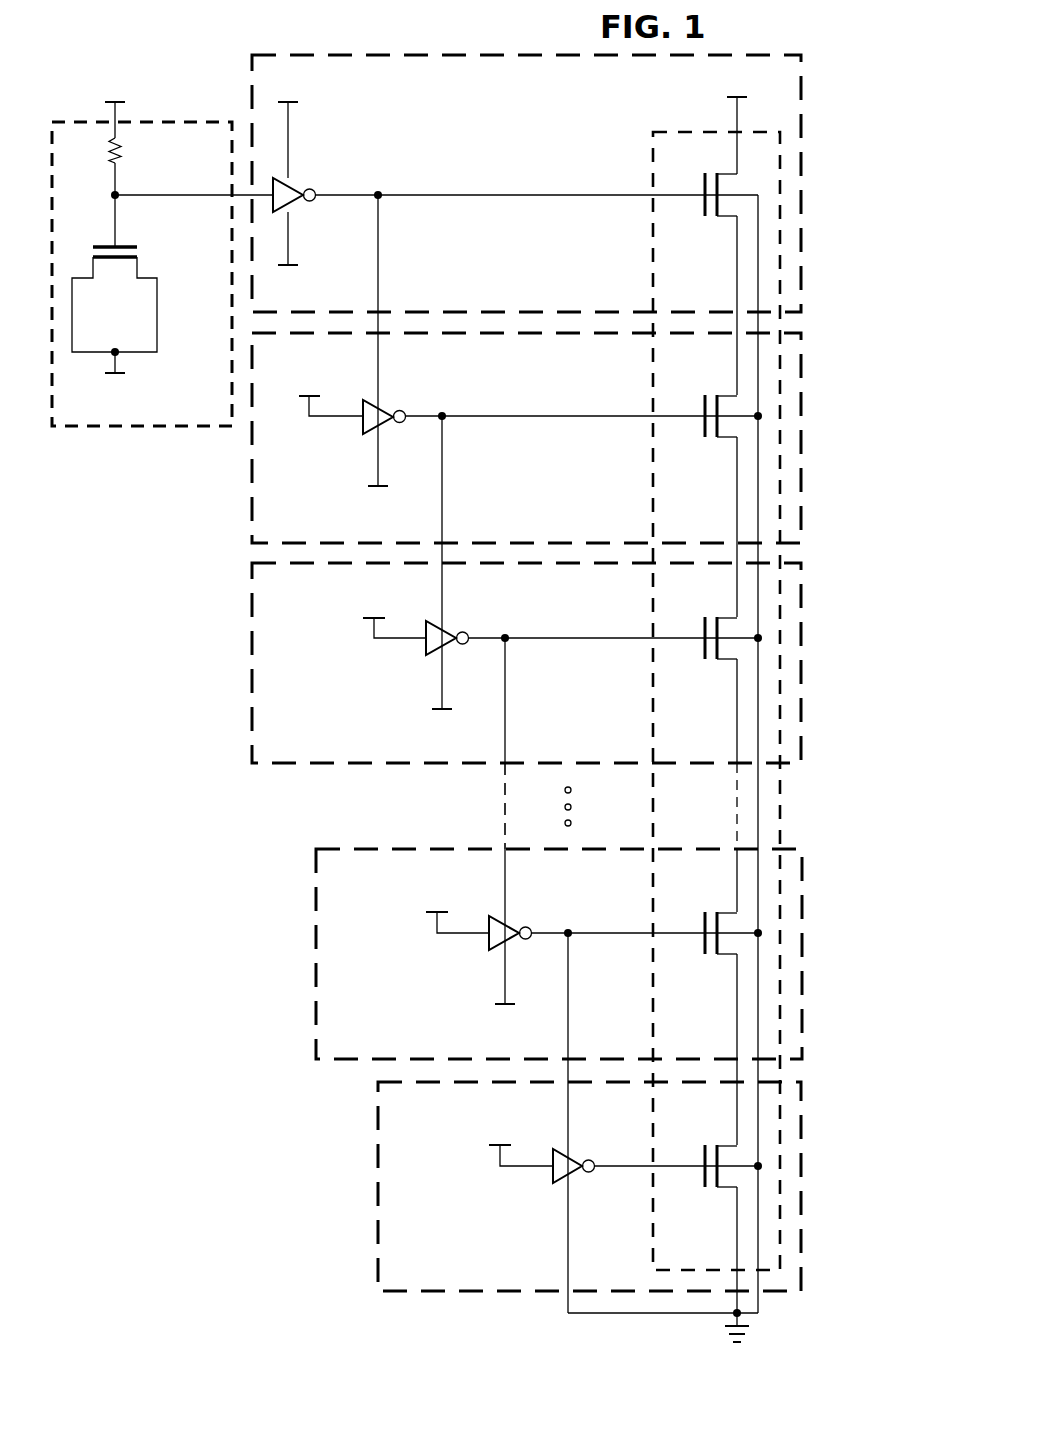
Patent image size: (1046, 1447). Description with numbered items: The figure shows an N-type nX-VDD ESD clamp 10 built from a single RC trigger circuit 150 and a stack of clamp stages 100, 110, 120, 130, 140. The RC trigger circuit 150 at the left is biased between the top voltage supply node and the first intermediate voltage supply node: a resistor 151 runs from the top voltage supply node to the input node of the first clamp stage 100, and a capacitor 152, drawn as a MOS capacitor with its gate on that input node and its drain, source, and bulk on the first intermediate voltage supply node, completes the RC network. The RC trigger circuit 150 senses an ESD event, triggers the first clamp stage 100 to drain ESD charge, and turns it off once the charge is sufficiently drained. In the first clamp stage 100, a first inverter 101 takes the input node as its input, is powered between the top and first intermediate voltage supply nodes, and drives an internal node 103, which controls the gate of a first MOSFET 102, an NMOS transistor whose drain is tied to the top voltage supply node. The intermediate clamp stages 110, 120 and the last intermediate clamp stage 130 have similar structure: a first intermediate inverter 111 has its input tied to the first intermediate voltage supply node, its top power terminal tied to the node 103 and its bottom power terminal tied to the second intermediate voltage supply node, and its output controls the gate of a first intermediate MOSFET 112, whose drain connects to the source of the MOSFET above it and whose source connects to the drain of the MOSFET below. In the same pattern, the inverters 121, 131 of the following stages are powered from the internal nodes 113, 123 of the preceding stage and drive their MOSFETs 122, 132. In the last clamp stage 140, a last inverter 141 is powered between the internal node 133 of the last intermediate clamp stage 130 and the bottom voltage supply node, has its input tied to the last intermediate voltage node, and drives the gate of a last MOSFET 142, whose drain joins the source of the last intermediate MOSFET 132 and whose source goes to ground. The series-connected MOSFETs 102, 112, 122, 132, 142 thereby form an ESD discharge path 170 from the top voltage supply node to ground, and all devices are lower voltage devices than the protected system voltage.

The nX-VDD ESD clamp 10 is at (218, 1070).
The first clamp stage 100 is at (567, 227).
The first inverter 101 is at (295, 205).
The first MOSFET 102 is at (705, 206).
The internal node 103 is at (378, 190).
The first intermediate clamp stage 110 is at (567, 477).
The first intermediate inverter 111 is at (361, 428).
The first intermediate MOSFET 112 is at (705, 428).
The output node 113 is at (441, 411).
The third clamp stage 120 is at (567, 740).
The second intermediate inverter 121 is at (424, 648).
The MOSFET of third clamp stage 122 is at (705, 650).
The output node 123 is at (504, 632).
The last intermediate clamp stage 130 is at (602, 1081).
The inverter 131 is at (487, 943).
The last intermediate MOSFET 132 is at (705, 945).
The internal node 133 is at (567, 927).
The last clamp stage 140 is at (633, 1186).
The last inverter 141 is at (551, 1176).
The last MOSFET 142 is at (705, 1178).
The RC trigger circuit 150 is at (162, 284).
The resistor 151 is at (121, 152).
The capacitor 152 is at (128, 246).
The ESD discharge path 170 is at (648, 264).